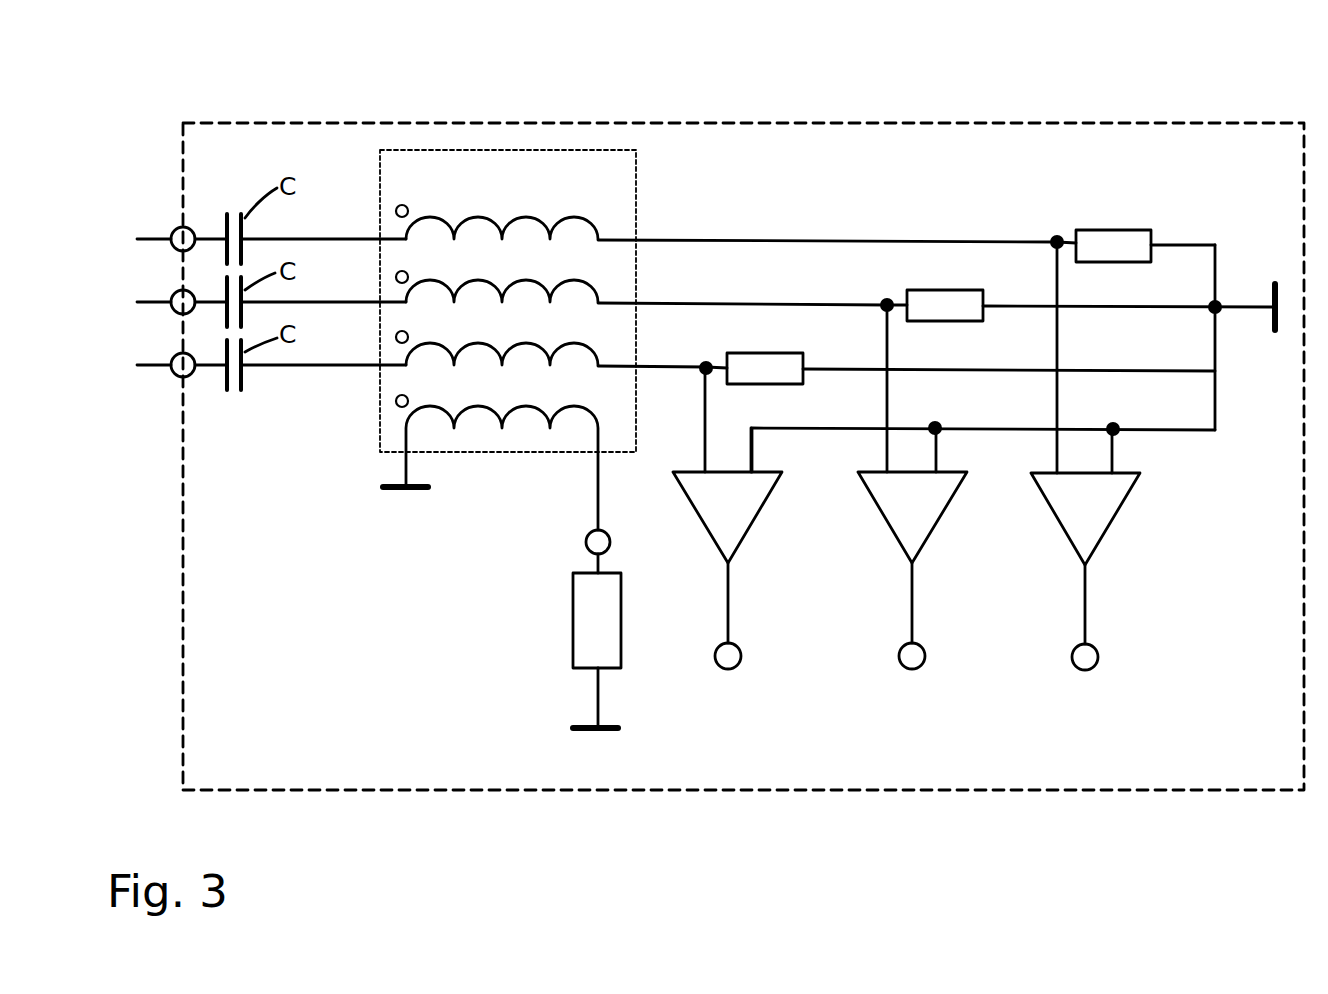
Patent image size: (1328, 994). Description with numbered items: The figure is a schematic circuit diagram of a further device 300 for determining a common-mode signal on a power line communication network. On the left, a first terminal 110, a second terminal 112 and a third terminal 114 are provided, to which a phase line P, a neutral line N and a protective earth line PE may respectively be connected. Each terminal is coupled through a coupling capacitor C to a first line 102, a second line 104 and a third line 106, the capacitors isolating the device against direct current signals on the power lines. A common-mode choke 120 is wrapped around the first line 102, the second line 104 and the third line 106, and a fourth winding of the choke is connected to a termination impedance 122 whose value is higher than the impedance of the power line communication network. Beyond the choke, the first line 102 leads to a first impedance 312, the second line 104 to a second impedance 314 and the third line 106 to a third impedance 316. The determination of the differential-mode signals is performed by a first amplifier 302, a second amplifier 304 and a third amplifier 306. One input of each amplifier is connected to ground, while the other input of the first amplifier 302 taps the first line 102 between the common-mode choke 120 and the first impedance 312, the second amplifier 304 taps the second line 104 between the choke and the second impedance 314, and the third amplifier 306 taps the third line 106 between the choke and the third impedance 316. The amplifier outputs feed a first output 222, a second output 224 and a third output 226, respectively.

The device 300 is at (1173, 123).
The common-mode choke 120 is at (538, 150).
The termination impedance 122 is at (621, 668).
The first terminal 110 is at (176, 233).
The second terminal 112 is at (174, 297).
The third terminal 114 is at (176, 373).
The first line 102 is at (862, 240).
The second line 104 is at (745, 304).
The third line 106 is at (644, 366).
The first impedance 312 is at (1138, 229).
The second impedance 314 is at (974, 292).
The third impedance 316 is at (795, 354).
The first amplifier 302 is at (1100, 477).
The second amplifier 304 is at (926, 511).
The third amplifier 306 is at (742, 542).
The first output 222 is at (1080, 670).
The second output 224 is at (921, 667).
The third output 226 is at (737, 667).